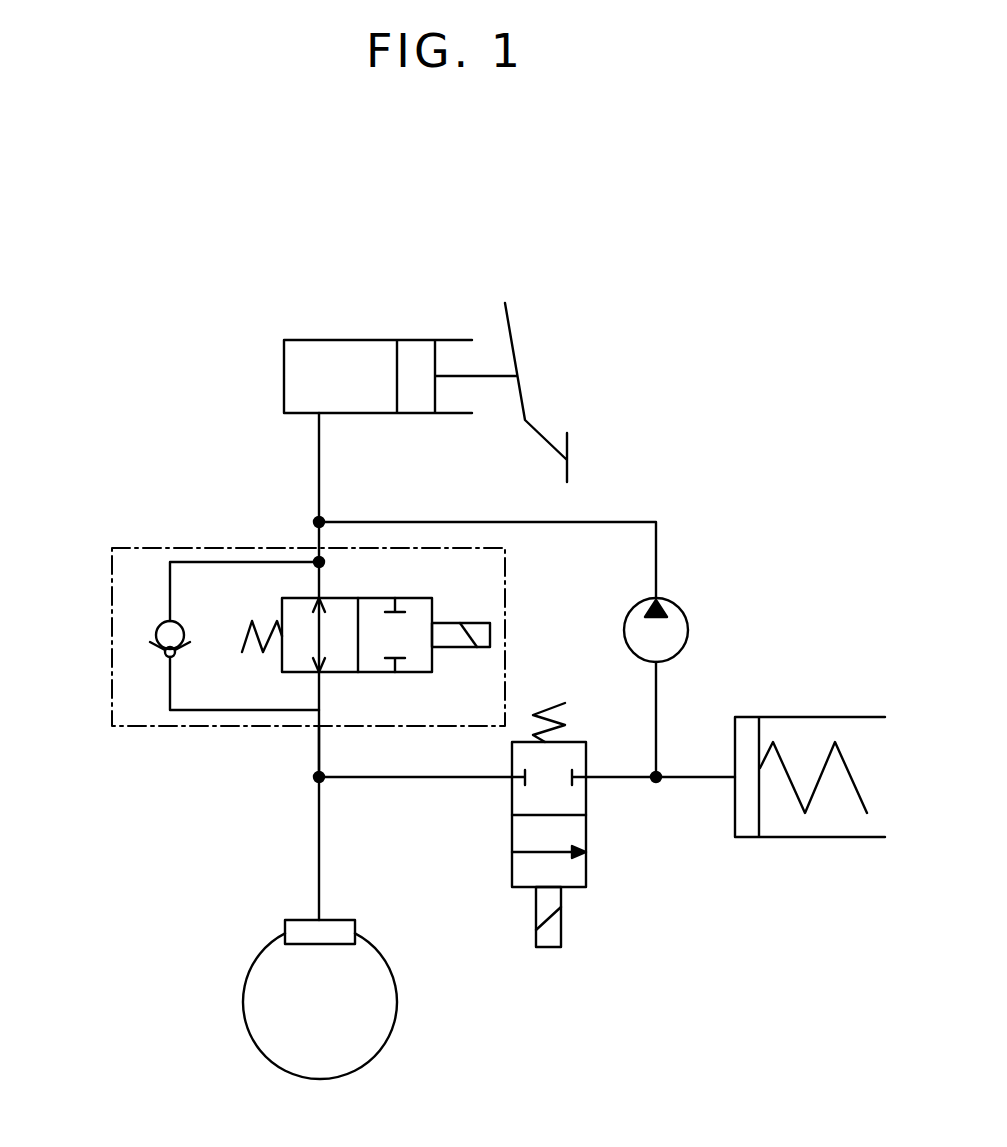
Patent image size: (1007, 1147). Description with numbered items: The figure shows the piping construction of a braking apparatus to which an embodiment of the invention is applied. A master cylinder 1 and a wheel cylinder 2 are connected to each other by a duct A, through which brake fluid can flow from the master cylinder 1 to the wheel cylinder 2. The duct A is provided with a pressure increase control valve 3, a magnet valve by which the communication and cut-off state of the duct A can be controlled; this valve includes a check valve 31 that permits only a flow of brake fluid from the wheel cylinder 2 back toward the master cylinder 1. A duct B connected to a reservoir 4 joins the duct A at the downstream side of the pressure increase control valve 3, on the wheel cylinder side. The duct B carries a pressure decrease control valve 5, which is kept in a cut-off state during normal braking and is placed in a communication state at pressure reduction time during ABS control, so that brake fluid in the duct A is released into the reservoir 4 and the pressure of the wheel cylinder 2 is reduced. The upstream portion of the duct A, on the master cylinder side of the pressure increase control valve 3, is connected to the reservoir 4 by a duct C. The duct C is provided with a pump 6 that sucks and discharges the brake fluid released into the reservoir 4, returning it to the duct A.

The master cylinder 1 is at (355, 340).
The wheel cylinder 2 is at (305, 920).
The pressure increase control valve 3 is at (273, 593).
The check valve 31 is at (156, 633).
The reservoir 4 is at (805, 717).
The pressure decrease control valve 5 is at (586, 830).
The pump 6 is at (677, 603).
The duct A is at (319, 748).
The duct B is at (405, 778).
The duct C is at (632, 522).